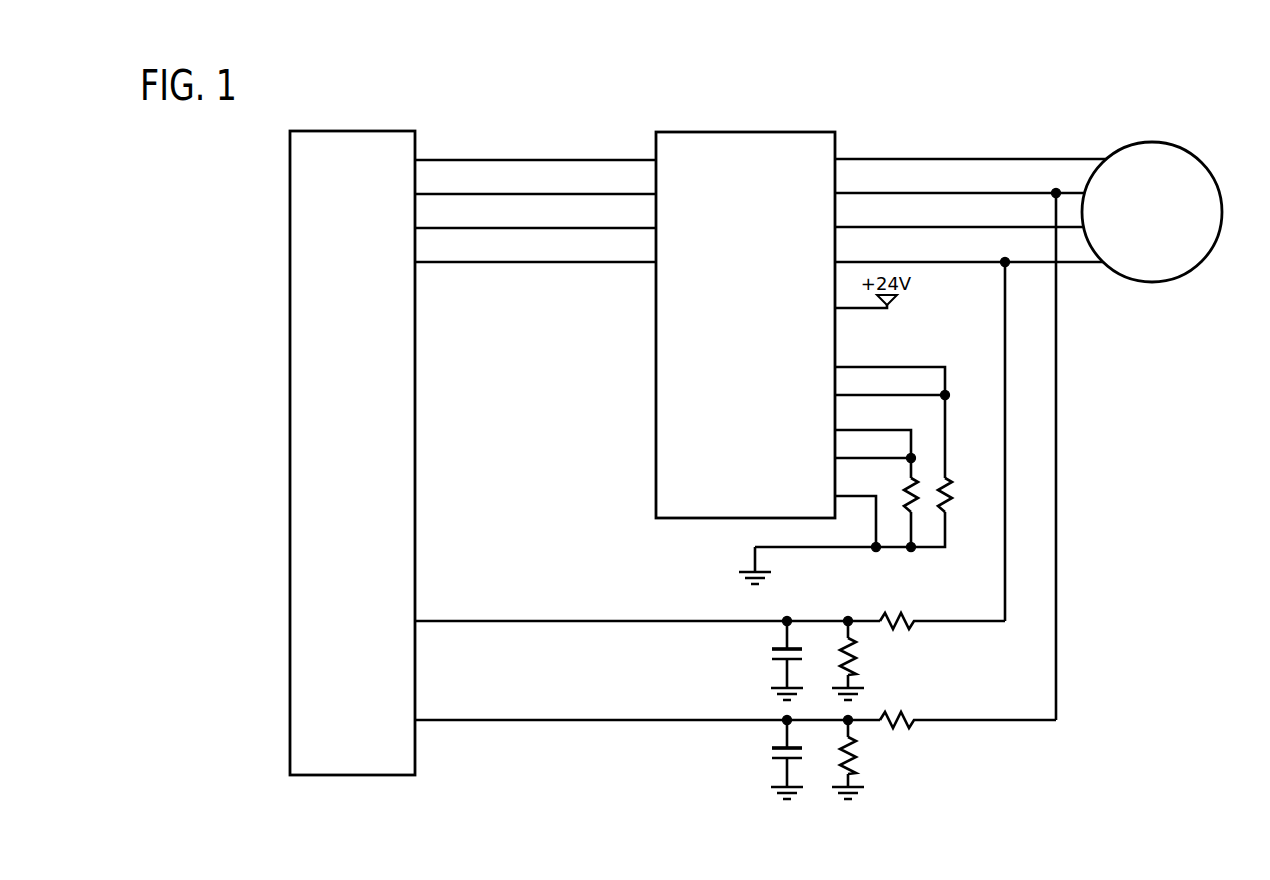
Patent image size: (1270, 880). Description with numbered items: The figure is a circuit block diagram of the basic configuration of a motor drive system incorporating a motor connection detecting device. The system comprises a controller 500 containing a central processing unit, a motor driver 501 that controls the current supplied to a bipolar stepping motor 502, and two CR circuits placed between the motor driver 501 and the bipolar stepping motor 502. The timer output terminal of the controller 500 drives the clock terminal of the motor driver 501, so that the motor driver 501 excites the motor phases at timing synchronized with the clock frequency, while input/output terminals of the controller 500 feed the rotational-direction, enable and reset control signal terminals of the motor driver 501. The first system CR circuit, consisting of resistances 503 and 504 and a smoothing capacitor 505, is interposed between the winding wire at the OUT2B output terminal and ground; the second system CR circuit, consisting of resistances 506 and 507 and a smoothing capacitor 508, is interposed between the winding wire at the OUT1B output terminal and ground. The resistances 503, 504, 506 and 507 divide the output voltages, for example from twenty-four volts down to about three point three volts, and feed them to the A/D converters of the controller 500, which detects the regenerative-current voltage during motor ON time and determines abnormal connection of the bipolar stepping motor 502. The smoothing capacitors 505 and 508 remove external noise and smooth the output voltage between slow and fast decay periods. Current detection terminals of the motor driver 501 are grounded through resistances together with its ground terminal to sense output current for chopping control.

The controller 500 is at (366, 131).
The motor driver 501 is at (786, 132).
The bipolar stepping motor 502 is at (1201, 156).
The resistance 503 is at (915, 614).
The resistance 504 is at (862, 661).
The smoothing capacitor 505 is at (765, 652).
The resistance 506 is at (915, 713).
The resistance 507 is at (862, 760).
The smoothing capacitor 508 is at (765, 751).